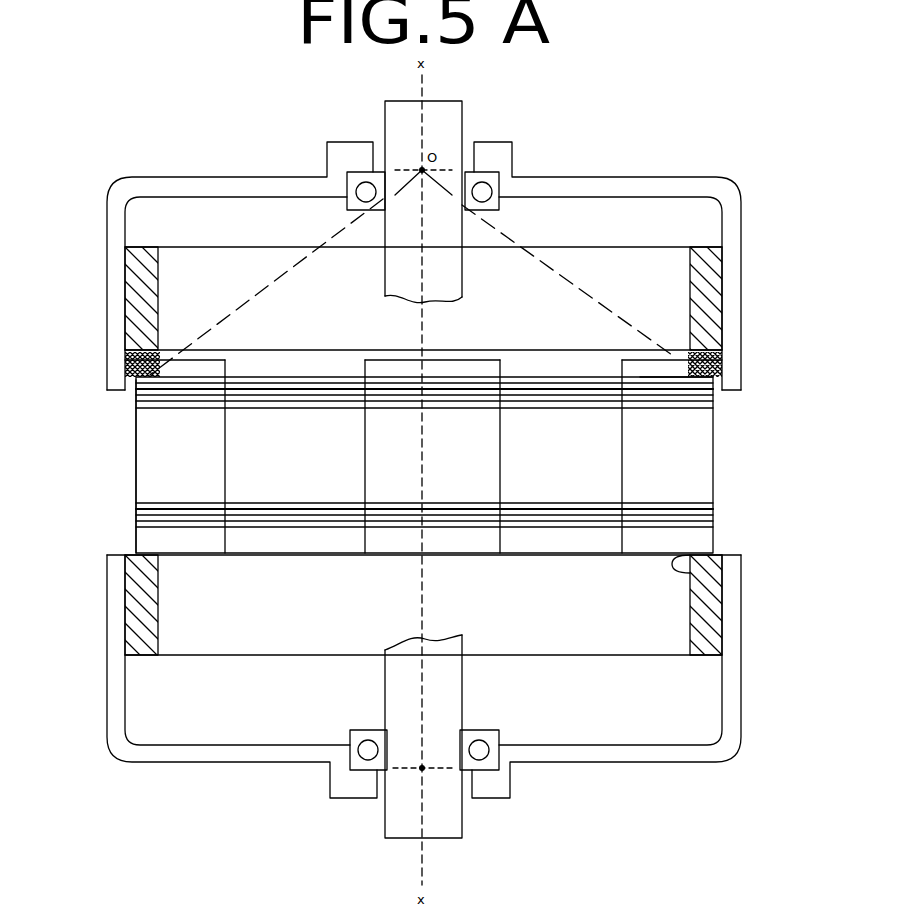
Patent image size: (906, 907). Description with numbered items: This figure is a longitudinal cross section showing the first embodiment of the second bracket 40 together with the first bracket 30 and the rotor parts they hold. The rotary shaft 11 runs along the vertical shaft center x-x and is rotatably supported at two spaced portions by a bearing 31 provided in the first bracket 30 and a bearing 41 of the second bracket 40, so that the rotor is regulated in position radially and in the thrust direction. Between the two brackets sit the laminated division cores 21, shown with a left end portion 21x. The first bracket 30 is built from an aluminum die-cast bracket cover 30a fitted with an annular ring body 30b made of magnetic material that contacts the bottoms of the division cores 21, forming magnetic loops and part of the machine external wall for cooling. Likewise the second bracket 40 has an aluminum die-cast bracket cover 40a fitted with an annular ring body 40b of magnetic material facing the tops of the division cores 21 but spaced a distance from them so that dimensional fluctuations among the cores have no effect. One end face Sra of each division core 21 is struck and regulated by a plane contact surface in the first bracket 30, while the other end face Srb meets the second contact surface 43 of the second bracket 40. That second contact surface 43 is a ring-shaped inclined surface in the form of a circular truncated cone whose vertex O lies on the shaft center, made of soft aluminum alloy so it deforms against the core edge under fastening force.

The rotary shaft 11 is at (458, 123).
The division core 21 is at (702, 447).
The rotor end face 21x is at (135, 400).
The first bracket 30 is at (449, 676).
The bracket cover 30a is at (600, 758).
The annular ring body 30b is at (693, 658).
The bearing 31 is at (483, 771).
The second bracket 40 is at (459, 266).
The bracket cover 40a is at (697, 178).
The annular ring body 40b is at (700, 253).
The bearing 41 is at (492, 172).
The second contact surface 43 is at (714, 331).
The one end face Sra is at (690, 570).
The other end face Srb is at (690, 385).